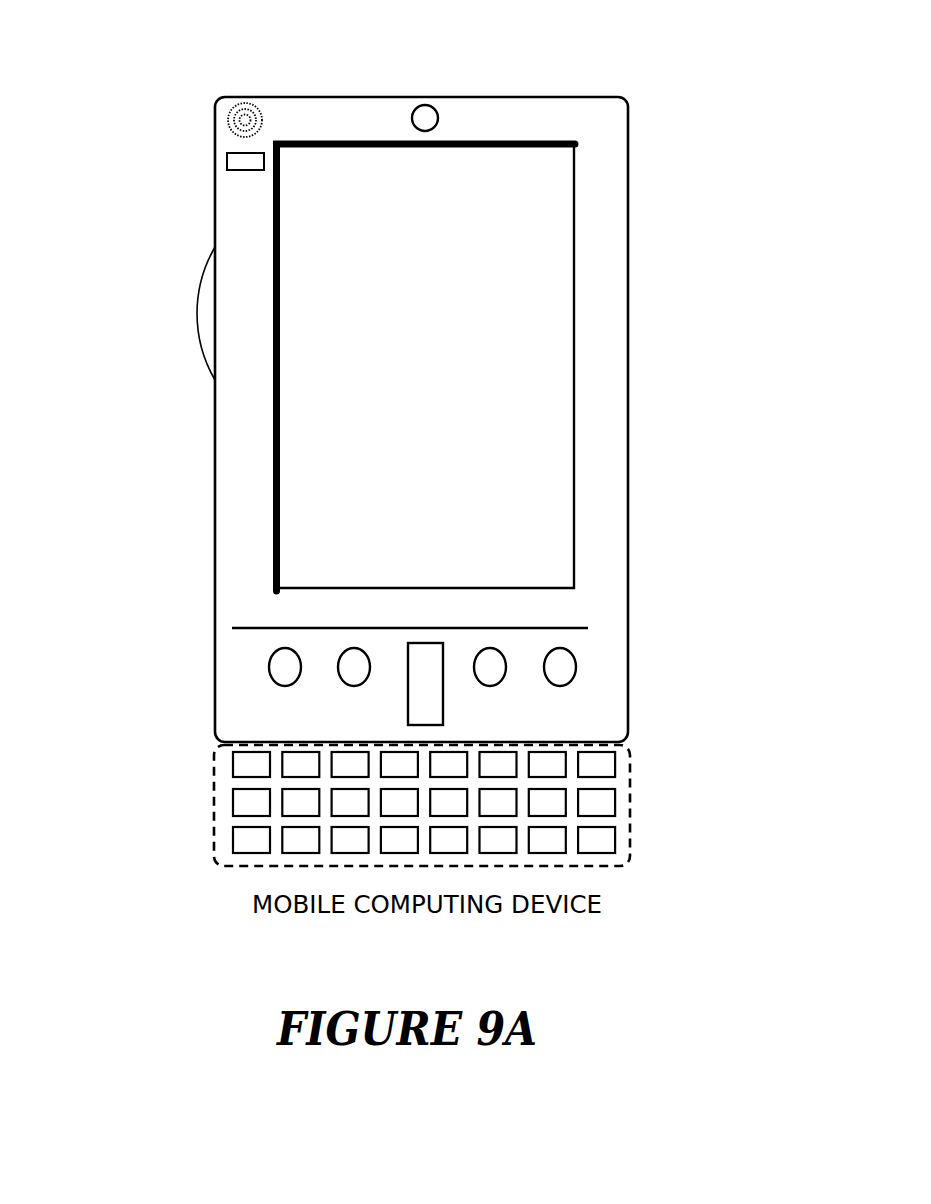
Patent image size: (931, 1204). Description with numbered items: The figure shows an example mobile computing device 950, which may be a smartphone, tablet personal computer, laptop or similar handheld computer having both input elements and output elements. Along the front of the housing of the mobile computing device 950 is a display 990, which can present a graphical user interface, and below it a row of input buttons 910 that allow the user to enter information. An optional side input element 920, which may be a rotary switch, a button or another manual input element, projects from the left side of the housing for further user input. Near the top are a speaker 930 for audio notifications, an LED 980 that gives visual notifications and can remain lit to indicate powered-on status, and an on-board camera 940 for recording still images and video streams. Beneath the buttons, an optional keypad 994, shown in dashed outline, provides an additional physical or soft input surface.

The input buttons 910 is at (562, 678).
The side input element 920 is at (188, 323).
The speaker 930 is at (228, 110).
The on-board camera 940 is at (432, 114).
The mobile computing device 950 is at (628, 113).
The LED 980 is at (228, 154).
The display screen 990 is at (300, 525).
The keyboard 994 is at (213, 834).